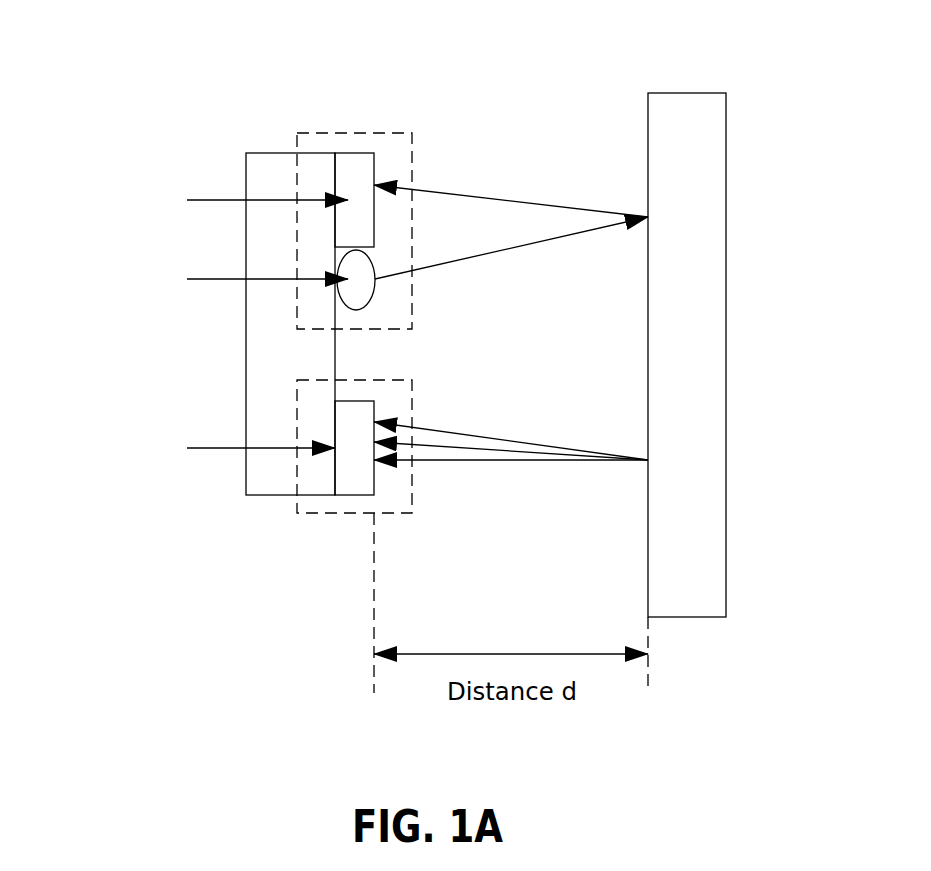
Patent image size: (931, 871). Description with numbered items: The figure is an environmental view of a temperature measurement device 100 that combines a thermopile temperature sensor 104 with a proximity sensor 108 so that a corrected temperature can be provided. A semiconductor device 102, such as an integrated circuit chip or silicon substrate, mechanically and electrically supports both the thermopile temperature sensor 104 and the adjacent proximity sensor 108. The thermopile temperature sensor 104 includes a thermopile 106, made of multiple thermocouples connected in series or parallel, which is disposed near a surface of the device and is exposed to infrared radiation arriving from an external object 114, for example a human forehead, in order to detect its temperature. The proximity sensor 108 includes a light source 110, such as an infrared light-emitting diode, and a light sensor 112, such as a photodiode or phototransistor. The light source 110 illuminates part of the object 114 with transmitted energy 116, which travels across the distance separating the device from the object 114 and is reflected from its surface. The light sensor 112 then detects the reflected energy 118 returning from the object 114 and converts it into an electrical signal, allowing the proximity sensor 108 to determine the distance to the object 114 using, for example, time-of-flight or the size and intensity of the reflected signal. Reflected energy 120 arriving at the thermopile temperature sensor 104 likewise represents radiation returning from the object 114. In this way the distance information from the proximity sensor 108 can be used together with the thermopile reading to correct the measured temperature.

The temperature measurement device 100 is at (147, 65).
The semiconductor device 102 is at (260, 252).
The thermopile temperature sensor 104 is at (305, 517).
The thermopile 106 is at (355, 482).
The proximity sensor 108 is at (328, 133).
The light source 110 is at (365, 290).
The light sensor 112 is at (355, 163).
The object 114 is at (687, 92).
The transmitted energy 116 is at (567, 237).
The reflected energy 118 is at (512, 197).
The reflected light beams to photodetector 120 is at (512, 462).